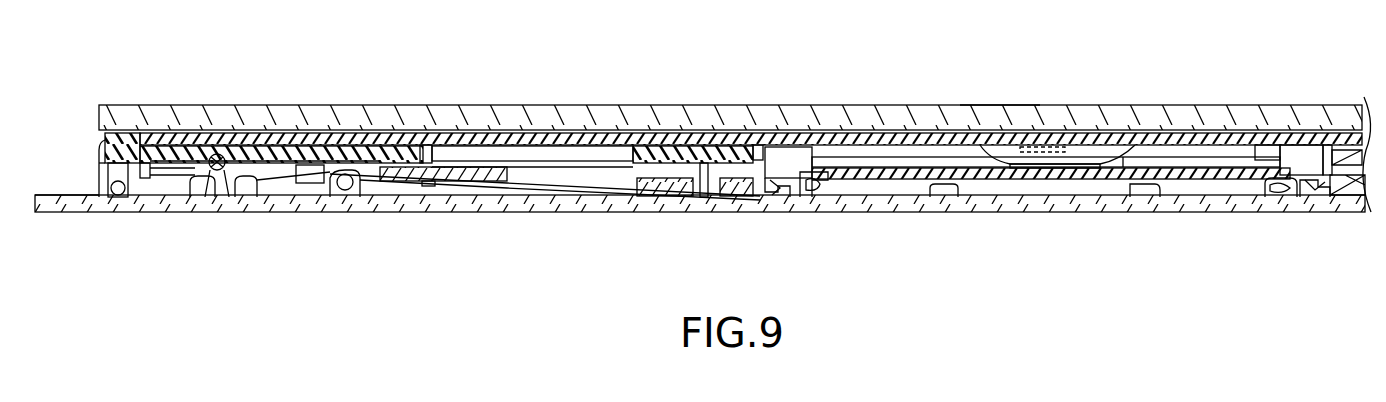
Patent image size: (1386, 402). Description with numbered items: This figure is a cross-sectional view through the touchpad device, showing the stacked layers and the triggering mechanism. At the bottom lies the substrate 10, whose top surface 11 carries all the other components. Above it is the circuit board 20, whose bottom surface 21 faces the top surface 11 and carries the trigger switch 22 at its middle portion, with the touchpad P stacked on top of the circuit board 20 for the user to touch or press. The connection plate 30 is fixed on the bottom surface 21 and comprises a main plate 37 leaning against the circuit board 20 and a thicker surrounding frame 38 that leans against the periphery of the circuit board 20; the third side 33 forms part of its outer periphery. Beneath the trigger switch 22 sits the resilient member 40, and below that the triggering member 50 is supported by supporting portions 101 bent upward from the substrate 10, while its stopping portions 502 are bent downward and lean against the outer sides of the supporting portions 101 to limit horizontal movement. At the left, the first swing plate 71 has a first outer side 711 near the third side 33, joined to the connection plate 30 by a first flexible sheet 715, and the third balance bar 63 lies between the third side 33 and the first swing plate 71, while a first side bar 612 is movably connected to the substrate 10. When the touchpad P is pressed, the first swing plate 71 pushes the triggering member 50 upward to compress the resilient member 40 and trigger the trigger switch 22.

The connection plate 30 is at (103, 53).
The third side 33 is at (100, 150).
The surrounding frame 38 is at (128, 150).
The main plate 37 is at (163, 142).
The top surface 11 is at (60, 194).
The substrate 10 is at (74, 213).
The first side bar 612 is at (119, 190).
The third balance bar 63 is at (214, 196).
The first flexible sheet 715 is at (265, 197).
The first outer side 711 is at (328, 193).
The first swing plate 71 is at (447, 182).
The stopping portion 502 is at (764, 188).
The supporting portion 101 is at (812, 194).
The triggering member 50 is at (1062, 175).
The bottom surface 21 is at (1122, 162).
The touchpad P is at (1000, 104).
The trigger switch 22 is at (1040, 148).
The resilient member 40 is at (1083, 158).
The circuit board 20 is at (1128, 157).